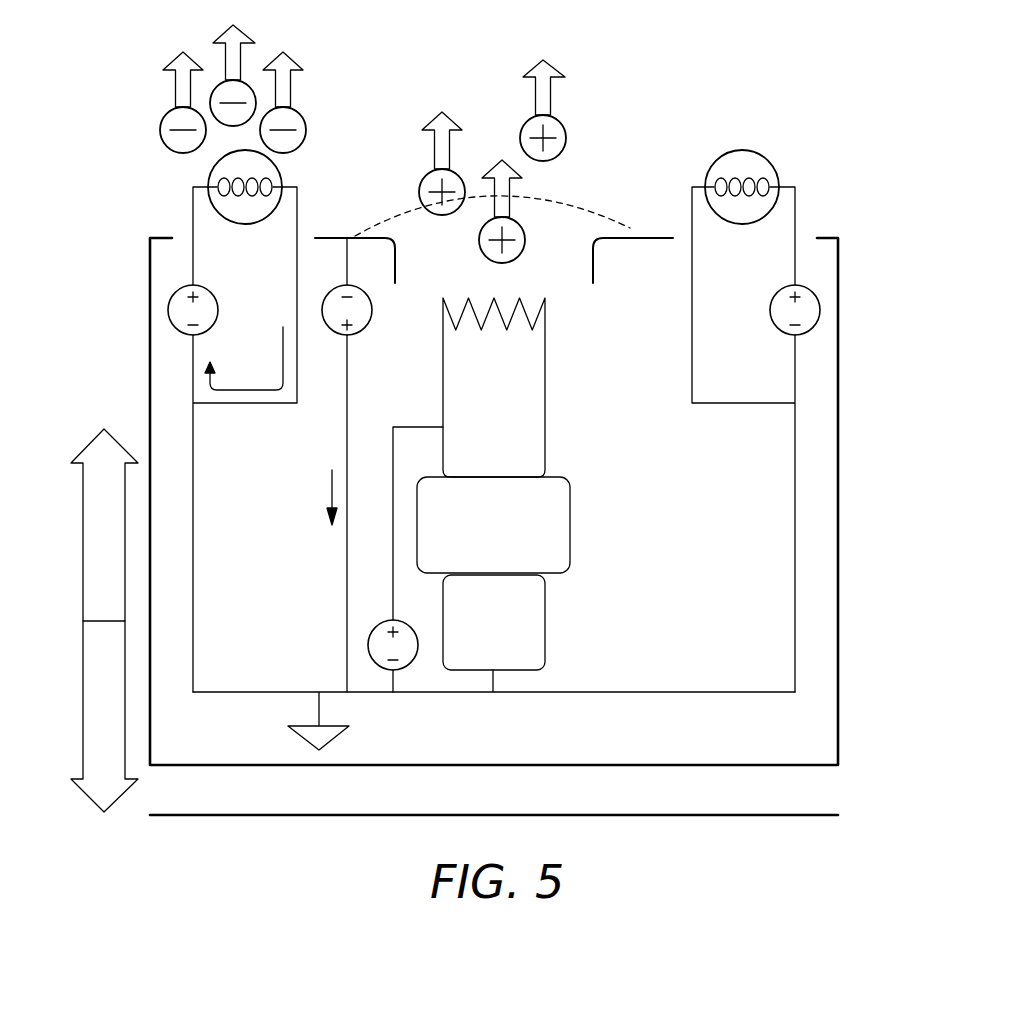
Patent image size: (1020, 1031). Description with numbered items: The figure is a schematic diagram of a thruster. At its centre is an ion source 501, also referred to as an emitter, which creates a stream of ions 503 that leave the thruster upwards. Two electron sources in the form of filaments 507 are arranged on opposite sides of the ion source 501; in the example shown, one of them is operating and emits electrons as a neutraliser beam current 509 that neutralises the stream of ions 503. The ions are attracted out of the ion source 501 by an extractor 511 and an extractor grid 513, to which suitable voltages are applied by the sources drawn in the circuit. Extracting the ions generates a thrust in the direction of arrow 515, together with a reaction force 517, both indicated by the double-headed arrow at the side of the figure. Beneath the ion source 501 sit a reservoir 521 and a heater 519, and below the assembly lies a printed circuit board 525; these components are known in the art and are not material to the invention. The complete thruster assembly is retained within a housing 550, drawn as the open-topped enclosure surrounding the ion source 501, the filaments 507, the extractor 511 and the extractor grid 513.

The ion source 501 is at (546, 385).
The stream of ions 503 is at (585, 110).
The filaments 507 is at (212, 170).
The neutraliser beam current 509 is at (138, 97).
The extractor 511 is at (333, 237).
The extractor grid 513 is at (650, 237).
The thrust direction arrow 515 is at (83, 523).
The reaction force 517 is at (83, 714).
The heater 519 is at (546, 618).
The reservoir 521 is at (571, 522).
The printed circuit board 525 is at (812, 818).
The housing 550 is at (840, 750).